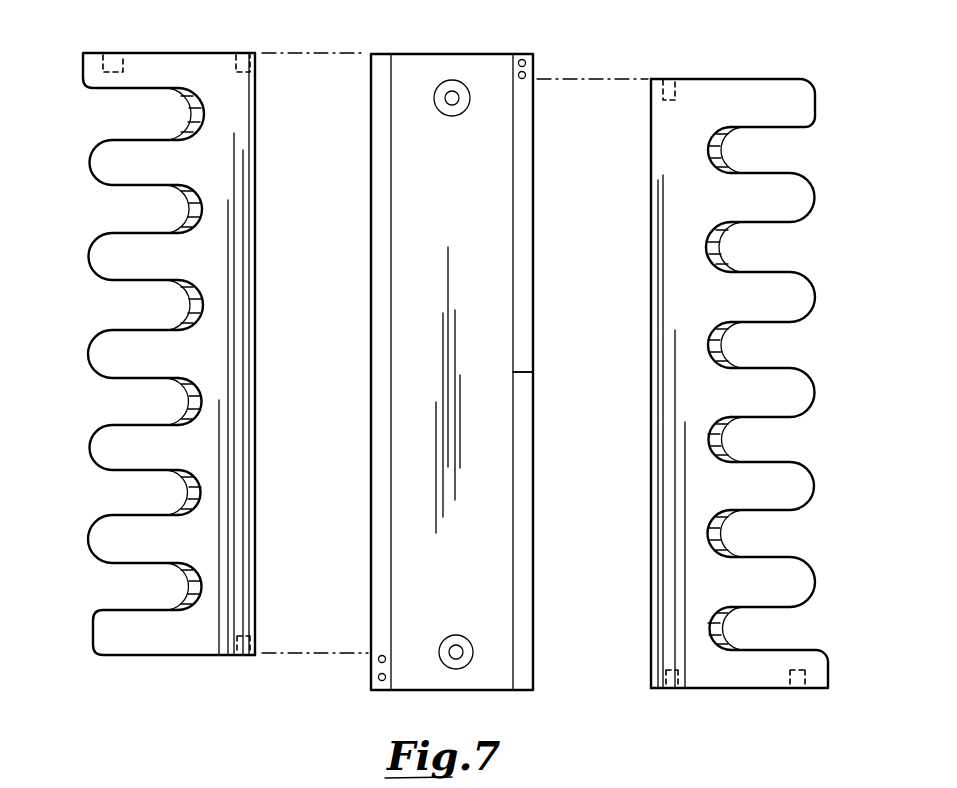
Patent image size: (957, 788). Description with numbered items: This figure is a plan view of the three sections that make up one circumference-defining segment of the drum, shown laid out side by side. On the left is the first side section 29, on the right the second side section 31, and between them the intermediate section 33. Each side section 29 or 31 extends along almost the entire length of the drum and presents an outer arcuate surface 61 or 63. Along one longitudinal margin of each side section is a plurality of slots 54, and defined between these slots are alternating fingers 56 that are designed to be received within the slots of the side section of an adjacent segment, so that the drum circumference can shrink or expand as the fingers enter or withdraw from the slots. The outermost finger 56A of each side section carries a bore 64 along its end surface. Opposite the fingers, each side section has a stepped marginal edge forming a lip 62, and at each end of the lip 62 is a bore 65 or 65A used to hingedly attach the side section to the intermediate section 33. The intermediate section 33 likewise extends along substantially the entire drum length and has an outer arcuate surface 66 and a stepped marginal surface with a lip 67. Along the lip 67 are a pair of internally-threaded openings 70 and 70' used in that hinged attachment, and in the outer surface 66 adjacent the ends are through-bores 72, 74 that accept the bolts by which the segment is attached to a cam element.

The first side section 29 is at (171, 60).
The second side section 31 is at (755, 100).
The intermediate section 33 is at (453, 70).
The slot 54 is at (777, 418).
The finger 56 is at (115, 177).
The outermost finger 56A is at (88, 92).
The outer arcuate surface 61 is at (148, 633).
The lip 62 is at (256, 345).
The outer arcuate surface 63 is at (744, 670).
The bore 64 is at (116, 52).
The bore 65 is at (243, 54).
The bore 65A is at (672, 690).
The outer arcuate surface 66 is at (535, 273).
The lip 67 is at (535, 630).
The internally-threaded opening 70 is at (339, 682).
The internally-threaded opening 70' is at (564, 62).
The through-bore 72 is at (455, 104).
The through-bore 74 is at (455, 636).